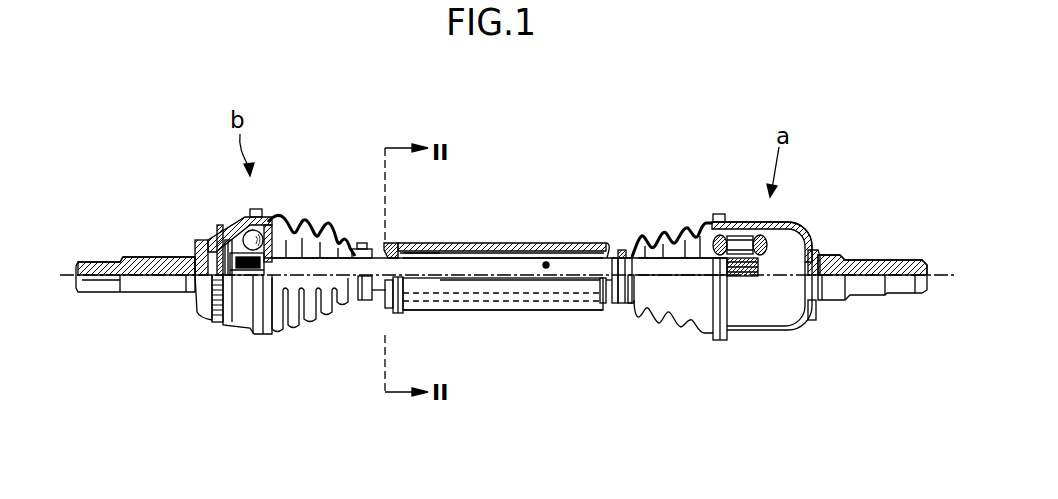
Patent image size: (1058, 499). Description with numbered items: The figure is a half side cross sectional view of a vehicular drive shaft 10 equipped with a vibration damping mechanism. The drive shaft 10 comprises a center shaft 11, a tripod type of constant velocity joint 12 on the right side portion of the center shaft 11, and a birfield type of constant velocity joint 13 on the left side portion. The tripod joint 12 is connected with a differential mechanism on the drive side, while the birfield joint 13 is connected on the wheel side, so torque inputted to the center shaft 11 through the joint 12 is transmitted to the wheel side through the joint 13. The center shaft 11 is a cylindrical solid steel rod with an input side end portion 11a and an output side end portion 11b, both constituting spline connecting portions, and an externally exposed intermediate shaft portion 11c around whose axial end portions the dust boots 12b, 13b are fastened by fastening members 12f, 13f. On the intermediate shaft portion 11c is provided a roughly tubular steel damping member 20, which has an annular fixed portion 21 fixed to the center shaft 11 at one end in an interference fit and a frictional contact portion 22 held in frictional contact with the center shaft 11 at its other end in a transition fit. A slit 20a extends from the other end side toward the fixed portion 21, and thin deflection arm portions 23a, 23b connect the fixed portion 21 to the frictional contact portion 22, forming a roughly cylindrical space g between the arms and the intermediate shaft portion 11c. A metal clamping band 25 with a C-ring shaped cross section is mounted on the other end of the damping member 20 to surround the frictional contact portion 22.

The drive shaft 10 is at (567, 152).
The center shaft 11 is at (489, 262).
The input side end portion 11a is at (686, 262).
The output side end portion 11b is at (305, 262).
The intermediate shaft portion 11c is at (546, 262).
The tripod type of constant velocity joint 12 is at (798, 228).
The dust boot 12b is at (668, 327).
The fastening member 12f is at (622, 306).
The birfield type of constant velocity joint 13 is at (218, 246).
The dust boot 13b is at (293, 333).
The fastening member 13f is at (358, 301).
The damping member 20 is at (536, 312).
The slit 20a is at (438, 280).
The fixed portion 21 is at (614, 250).
The frictional contact portion 22 is at (384, 243).
The deflection arm portion 23a is at (456, 246).
The deflection arm portion 23b is at (493, 312).
The clamping band 25 is at (399, 313).
The space g is at (425, 245).